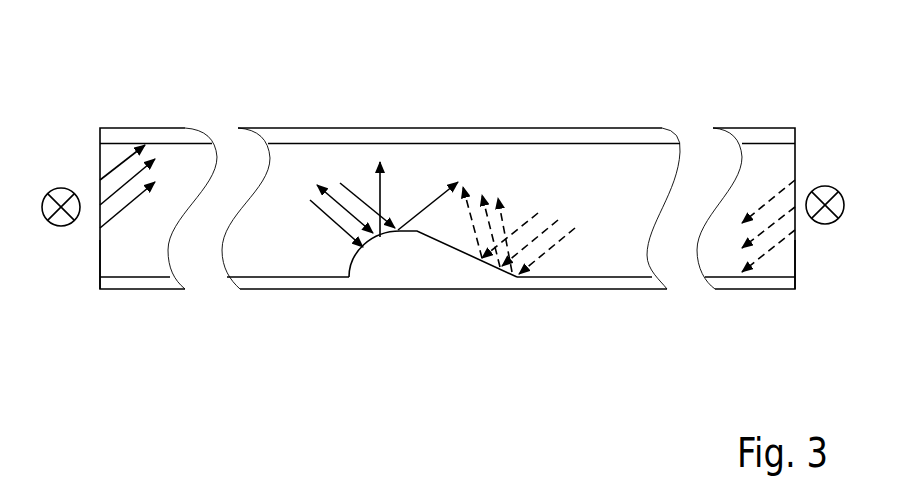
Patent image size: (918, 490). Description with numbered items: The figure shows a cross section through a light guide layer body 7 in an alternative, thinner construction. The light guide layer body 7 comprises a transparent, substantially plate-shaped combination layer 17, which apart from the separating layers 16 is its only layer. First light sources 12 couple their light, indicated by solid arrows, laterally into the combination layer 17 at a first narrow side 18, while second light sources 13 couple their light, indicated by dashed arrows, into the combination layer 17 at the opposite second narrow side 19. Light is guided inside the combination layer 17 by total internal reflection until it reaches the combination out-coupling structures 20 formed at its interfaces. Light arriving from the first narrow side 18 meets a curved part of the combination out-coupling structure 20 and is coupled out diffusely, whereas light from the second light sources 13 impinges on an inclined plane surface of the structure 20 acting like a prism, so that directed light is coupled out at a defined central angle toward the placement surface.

The light guide layer body 7 is at (712, 83).
The first light sources 12 is at (59, 190).
The second light sources 13 is at (827, 188).
The separating layers 16 is at (123, 135).
The combination layer 17 is at (542, 160).
The first narrow side 18 is at (98, 260).
The second narrow side 19 is at (797, 257).
The combination out-coupling structures 20 is at (407, 260).